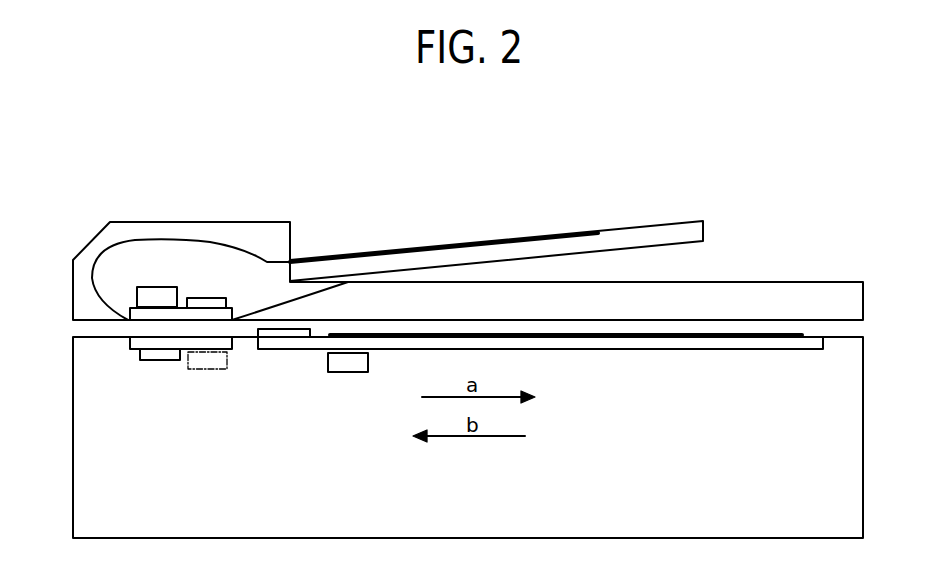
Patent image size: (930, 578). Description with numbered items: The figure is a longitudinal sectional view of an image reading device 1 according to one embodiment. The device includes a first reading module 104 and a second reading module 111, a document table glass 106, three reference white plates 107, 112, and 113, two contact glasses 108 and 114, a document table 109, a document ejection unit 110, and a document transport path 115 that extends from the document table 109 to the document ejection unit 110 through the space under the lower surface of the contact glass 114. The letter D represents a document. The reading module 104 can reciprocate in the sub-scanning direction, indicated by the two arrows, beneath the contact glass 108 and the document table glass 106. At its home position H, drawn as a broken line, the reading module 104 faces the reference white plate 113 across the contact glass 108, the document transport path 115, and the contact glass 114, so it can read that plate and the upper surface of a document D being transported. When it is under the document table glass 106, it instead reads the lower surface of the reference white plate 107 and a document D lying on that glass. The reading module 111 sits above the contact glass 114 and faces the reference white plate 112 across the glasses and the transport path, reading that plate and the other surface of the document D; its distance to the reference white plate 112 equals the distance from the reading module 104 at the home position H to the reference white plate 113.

The image reading device 1 is at (413, 172).
The reading module 104 is at (346, 372).
The document table glass 106 is at (792, 349).
The reference white plate 107 is at (283, 335).
The contact glass 108 is at (130, 346).
The document table 109 is at (703, 232).
The document ejection unit 110 is at (830, 280).
The reading module 111 is at (157, 287).
The reference white plate 112 is at (157, 361).
The reference white plate 113 is at (207, 298).
The contact glass 114 is at (234, 305).
The document transport path 115 is at (131, 240).
The document D is at (525, 236).
The home position H is at (212, 370).